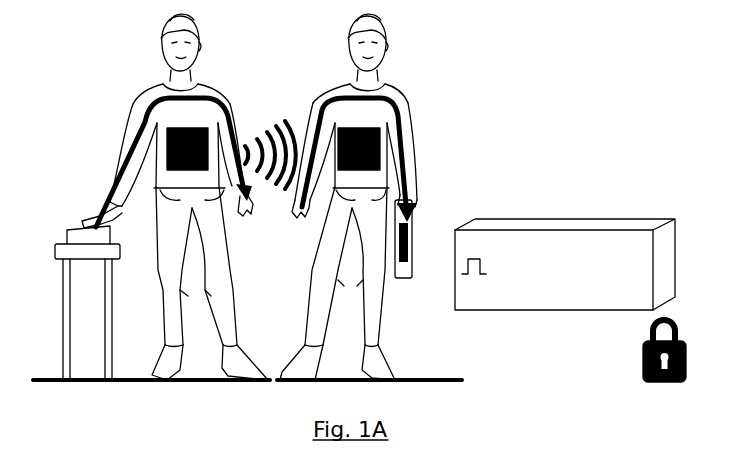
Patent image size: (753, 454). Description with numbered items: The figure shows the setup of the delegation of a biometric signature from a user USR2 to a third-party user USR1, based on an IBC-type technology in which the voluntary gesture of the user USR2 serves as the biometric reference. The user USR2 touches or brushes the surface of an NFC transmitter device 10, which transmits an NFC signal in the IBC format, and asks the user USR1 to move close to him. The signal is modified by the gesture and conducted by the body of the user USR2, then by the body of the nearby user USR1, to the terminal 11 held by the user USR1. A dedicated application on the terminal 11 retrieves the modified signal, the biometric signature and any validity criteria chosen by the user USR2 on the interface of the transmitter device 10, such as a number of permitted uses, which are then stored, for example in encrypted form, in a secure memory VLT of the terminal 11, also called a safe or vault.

The NFC transmitter device 10 is at (78, 224).
The terminal 11 is at (410, 232).
The user USR1 is at (322, 100).
The user USR2 is at (145, 100).
The secure memory VLT is at (614, 226).